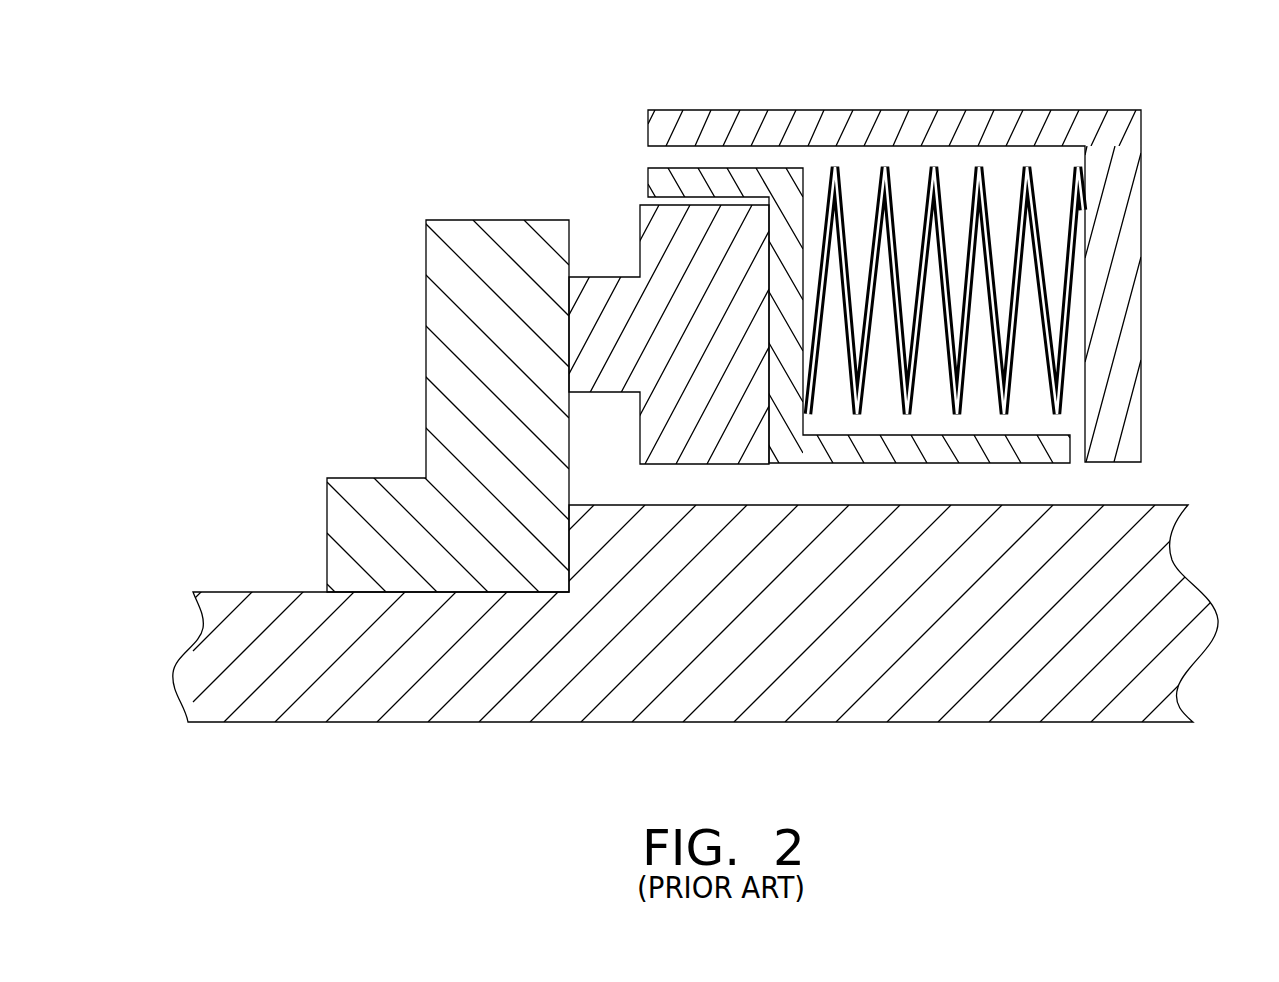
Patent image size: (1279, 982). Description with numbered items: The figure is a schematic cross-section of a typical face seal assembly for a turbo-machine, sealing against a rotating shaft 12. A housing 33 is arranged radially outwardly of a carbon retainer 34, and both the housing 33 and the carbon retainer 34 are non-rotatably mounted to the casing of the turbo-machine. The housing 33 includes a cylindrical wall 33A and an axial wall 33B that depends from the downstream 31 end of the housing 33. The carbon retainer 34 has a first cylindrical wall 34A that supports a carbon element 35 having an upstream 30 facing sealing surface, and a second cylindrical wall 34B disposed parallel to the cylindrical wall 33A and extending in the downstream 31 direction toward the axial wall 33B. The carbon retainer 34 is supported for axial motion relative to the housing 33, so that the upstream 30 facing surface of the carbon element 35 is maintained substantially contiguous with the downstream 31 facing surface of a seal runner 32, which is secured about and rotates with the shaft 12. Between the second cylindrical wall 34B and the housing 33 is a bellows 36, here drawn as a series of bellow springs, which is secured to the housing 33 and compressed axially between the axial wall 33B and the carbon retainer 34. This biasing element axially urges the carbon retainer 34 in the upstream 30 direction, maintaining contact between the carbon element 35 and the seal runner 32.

The shaft 12 is at (935, 683).
The upstream direction 30 is at (260, 450).
The downstream direction 31 is at (1263, 447).
The seal runner 32 is at (443, 360).
The housing 33 is at (956, 250).
The cylindrical wall 33A is at (740, 122).
The axial wall 33B is at (1128, 350).
The carbon retainer 34 is at (886, 313).
The first cylindrical wall 34A is at (662, 178).
The second cylindrical wall 34B is at (1027, 453).
The carbon element 35 is at (662, 258).
The bellows 36 is at (897, 253).